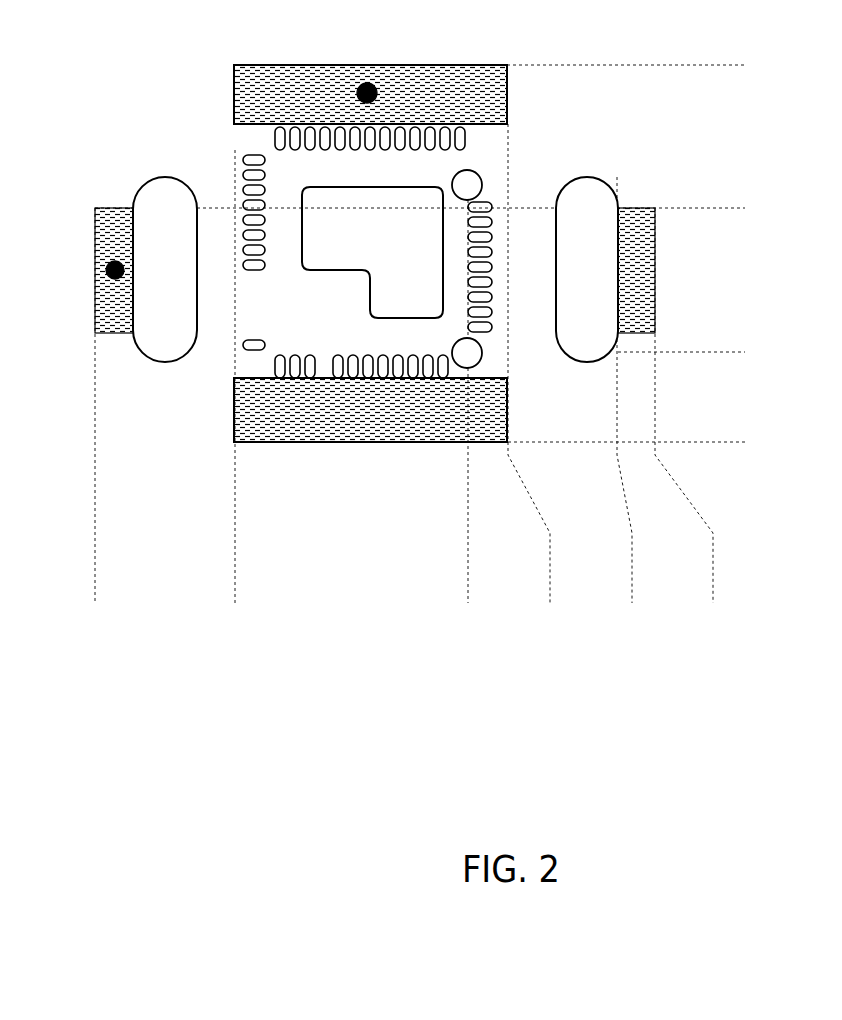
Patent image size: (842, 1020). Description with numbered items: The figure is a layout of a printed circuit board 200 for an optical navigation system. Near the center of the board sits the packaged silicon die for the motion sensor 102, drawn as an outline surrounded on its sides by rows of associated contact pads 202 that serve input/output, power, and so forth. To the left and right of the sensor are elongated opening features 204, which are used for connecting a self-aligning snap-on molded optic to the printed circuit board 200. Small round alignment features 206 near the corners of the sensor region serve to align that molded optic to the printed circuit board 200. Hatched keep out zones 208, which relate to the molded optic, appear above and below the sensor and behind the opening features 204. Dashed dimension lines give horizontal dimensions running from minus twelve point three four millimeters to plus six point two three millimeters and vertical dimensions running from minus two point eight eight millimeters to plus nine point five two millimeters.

The printed circuit board 200 is at (440, 490).
The motion sensor 102 is at (372, 252).
The contact pads 202 is at (240, 160).
The opening features 204 is at (375, 269).
The alignment features 206 is at (485, 181).
The keep out zones 208 is at (362, 84).